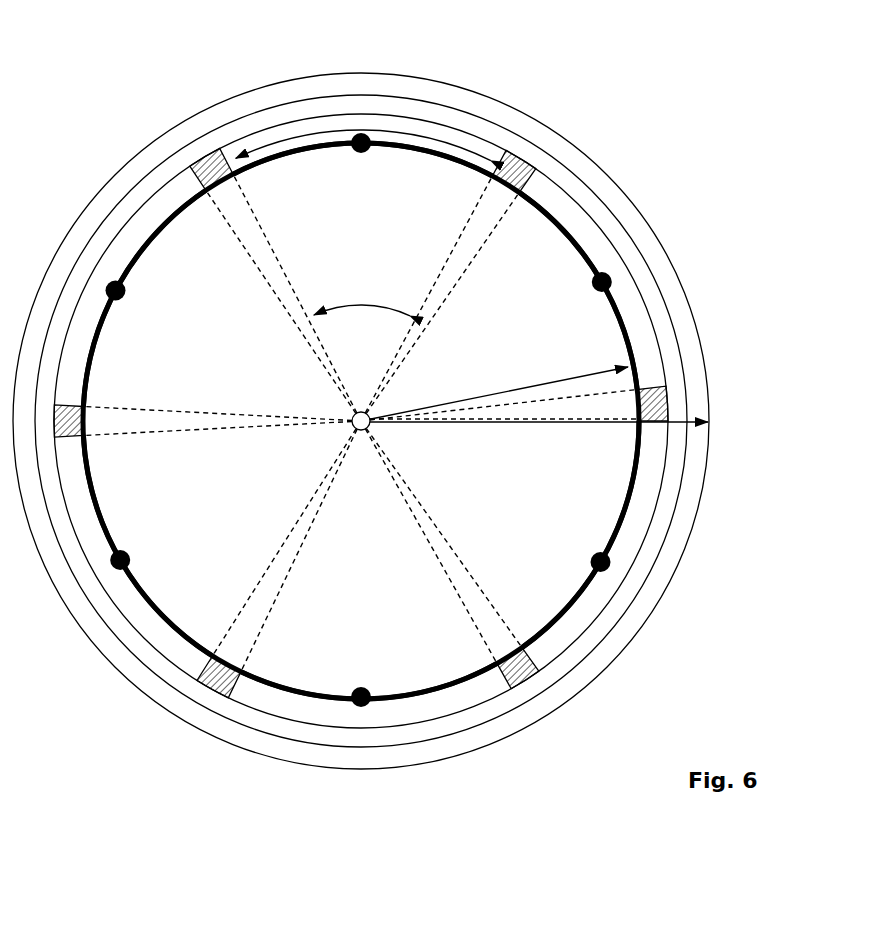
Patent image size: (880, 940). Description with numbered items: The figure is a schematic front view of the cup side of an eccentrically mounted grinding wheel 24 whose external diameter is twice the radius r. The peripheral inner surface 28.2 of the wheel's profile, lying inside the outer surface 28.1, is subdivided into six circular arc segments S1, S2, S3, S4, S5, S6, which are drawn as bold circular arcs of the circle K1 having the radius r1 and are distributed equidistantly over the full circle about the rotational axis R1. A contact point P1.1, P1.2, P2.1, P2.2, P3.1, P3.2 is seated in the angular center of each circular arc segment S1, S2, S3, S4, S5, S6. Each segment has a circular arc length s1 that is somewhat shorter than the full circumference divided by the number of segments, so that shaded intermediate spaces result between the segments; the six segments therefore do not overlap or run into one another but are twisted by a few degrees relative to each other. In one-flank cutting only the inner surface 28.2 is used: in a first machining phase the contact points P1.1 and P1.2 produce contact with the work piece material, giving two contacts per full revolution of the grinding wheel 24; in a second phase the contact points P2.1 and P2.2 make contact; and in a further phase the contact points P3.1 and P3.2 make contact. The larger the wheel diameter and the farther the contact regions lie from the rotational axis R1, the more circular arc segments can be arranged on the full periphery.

The grinding wheel 24 is at (706, 482).
The outer surface 28.1 is at (512, 717).
The inner surface 28.2 is at (632, 525).
The circle K1 is at (565, 605).
The circular arc segment S1 is at (441, 158).
The circular arc segment S2 is at (432, 690).
The circular arc segment S3 is at (95, 338).
The circular arc segment S4 is at (627, 462).
The circular arc segment S5 is at (90, 468).
The circular arc segment S6 is at (553, 240).
The circular arc length s1 is at (413, 132).
The radius r1 is at (494, 389).
The radius r is at (534, 437).
The rotational axis R1 is at (354, 428).
The contact point P1.1 is at (362, 158).
The contact point P1.2 is at (360, 685).
The contact point P2.1 is at (140, 300).
The contact point P2.2 is at (574, 553).
The contact point P3.1 is at (144, 559).
The contact point P3.2 is at (575, 286).